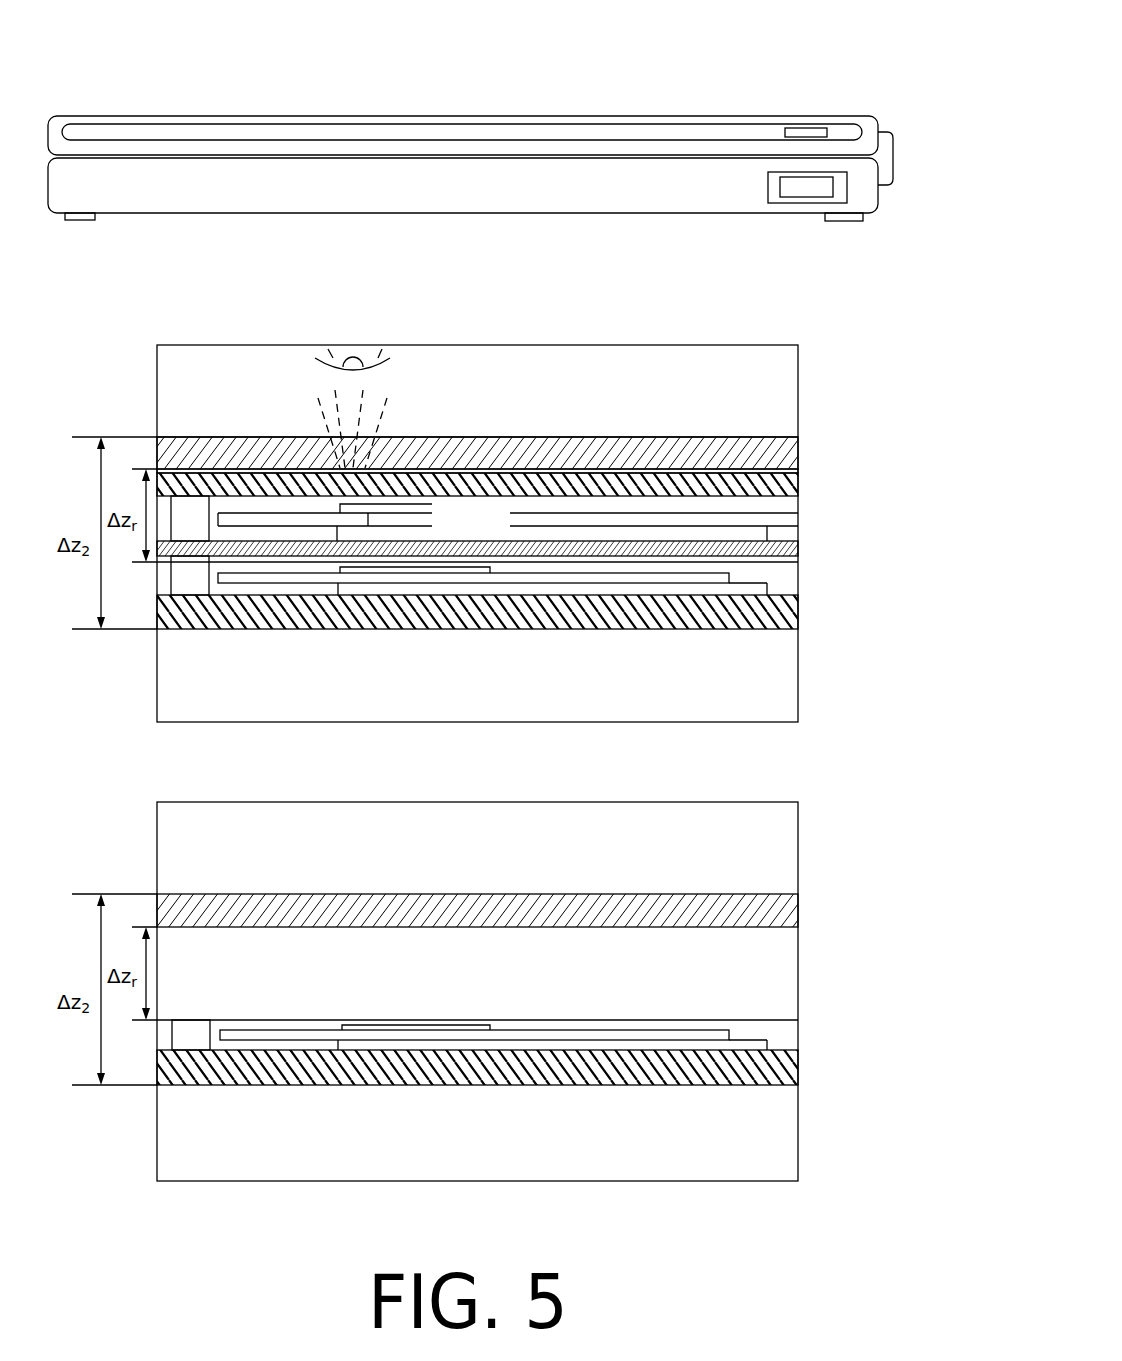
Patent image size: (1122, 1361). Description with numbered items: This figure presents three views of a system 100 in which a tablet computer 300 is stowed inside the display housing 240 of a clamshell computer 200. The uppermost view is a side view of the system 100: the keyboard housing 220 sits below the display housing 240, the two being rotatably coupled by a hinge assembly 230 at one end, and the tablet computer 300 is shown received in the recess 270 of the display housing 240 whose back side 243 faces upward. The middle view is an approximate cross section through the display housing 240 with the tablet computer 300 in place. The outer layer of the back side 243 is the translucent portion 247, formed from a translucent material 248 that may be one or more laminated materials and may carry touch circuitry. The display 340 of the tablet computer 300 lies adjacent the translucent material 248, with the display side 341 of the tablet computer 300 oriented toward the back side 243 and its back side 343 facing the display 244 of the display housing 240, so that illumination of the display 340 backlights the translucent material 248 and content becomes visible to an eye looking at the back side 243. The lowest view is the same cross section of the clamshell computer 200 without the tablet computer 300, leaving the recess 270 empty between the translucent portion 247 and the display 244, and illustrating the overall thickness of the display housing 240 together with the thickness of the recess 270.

The system 100 is at (786, 38).
The clamshell computer 200 is at (463, 214).
The keyboard housing 220 is at (612, 215).
The hinge assembly 230 is at (884, 188).
The display housing 240 is at (612, 116).
The back side 243 is at (712, 116).
The display 244 is at (642, 630).
The translucent portion 247 is at (652, 437).
The translucent material 248 is at (488, 461).
The tablet computer recess 270 is at (490, 990).
The tablet computer 300 is at (378, 122).
The display 340 is at (798, 486).
The display side 341 is at (798, 470).
The back side 343 is at (798, 552).